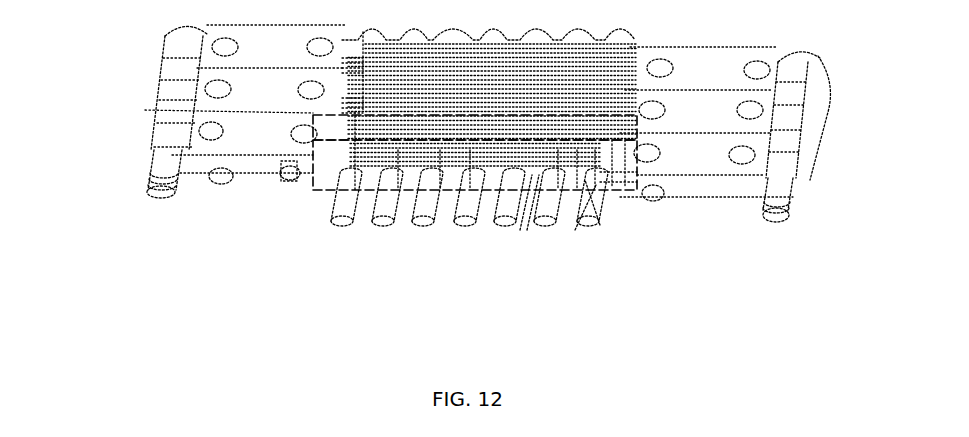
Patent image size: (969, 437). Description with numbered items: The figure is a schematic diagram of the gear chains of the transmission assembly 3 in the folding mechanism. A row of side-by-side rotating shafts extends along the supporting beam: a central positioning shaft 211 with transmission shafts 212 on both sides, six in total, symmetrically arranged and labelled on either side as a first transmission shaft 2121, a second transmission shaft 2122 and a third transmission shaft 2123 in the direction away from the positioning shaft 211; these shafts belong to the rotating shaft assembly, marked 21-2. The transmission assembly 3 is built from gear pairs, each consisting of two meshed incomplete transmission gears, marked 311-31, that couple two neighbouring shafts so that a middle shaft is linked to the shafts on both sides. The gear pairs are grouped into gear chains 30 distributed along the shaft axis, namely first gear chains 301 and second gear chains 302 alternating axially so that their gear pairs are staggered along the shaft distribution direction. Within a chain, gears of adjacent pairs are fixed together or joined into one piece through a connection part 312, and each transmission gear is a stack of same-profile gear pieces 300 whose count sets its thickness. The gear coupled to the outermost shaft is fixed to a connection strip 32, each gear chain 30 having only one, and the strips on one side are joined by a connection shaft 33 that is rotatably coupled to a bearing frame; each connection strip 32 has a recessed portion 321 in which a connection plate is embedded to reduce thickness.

The transmission assembly 3 is at (845, 29).
The gear chain 30 is at (83, 122).
The first gear chain 301 is at (313, 185).
The second gear chain 302 is at (313, 121).
The gear piece 300 is at (447, 31).
The recessed portion 321 is at (748, 34).
The connection strip 32 is at (812, 174).
The connection shaft 33 is at (786, 222).
The positioning shaft 211 is at (465, 226).
The transmission shaft 212 is at (273, 345).
The first transmission shaft 2121 is at (423, 224).
The second transmission shaft 2122 is at (381, 225).
The third transmission shaft 2123 is at (341, 224).
The second connector 21-2 is at (397, 351).
The connection part 312 is at (520, 230).
The terminal pins 311-31 is at (500, 178).